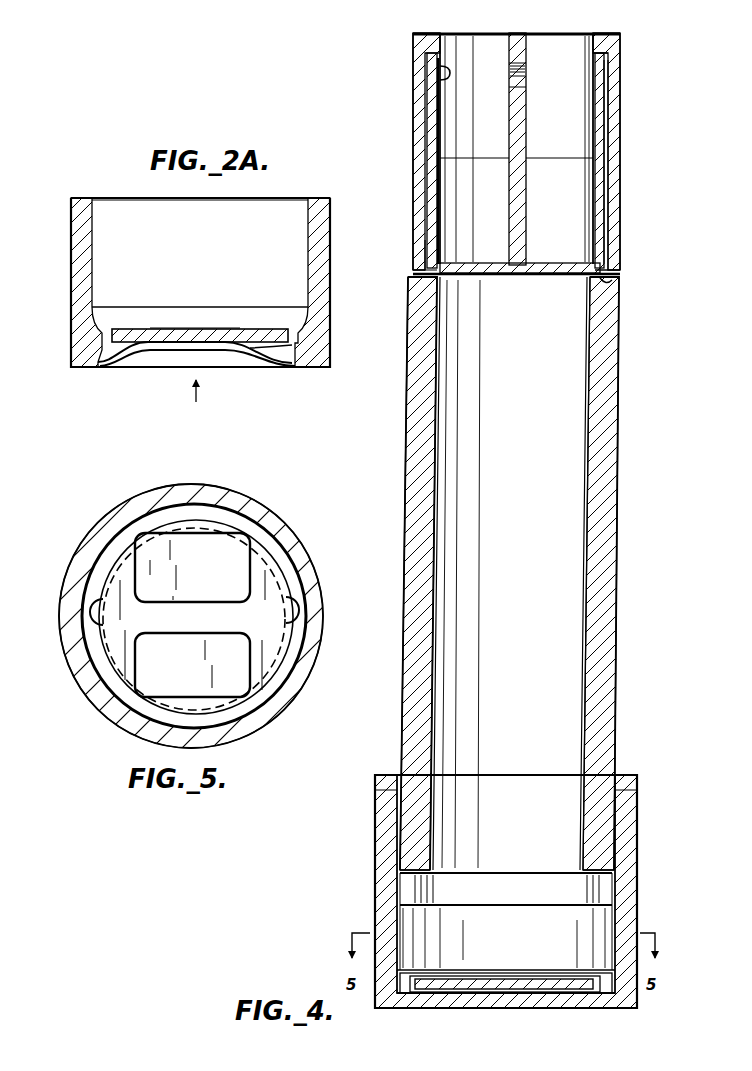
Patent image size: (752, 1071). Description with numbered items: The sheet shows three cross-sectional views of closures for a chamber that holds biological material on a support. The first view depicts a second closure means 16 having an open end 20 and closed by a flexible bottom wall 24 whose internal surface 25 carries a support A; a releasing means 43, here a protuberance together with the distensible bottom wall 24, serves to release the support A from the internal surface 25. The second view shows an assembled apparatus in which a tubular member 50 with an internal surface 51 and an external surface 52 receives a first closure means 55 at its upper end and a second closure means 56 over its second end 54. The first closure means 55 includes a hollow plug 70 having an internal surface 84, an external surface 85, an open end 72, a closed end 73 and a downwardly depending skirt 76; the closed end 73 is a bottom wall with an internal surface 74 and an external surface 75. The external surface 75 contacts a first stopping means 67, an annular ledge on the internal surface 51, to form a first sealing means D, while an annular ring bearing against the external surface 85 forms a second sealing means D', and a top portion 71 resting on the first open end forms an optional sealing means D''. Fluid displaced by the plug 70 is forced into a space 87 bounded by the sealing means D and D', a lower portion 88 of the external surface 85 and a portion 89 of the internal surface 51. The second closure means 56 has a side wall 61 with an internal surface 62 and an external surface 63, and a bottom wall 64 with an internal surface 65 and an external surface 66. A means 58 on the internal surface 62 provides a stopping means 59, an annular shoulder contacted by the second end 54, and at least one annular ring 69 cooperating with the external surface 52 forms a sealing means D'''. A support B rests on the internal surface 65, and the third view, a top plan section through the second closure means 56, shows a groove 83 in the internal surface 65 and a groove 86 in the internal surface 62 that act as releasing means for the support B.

In FIG. 2A, the second closure means 16 is at (70, 330).
In FIG. 2A, the open end 20 is at (114, 205).
In FIG. 2A, the bottom wall 24 is at (245, 344).
In FIG. 2A, the internal surface 25 is at (278, 353).
In FIG. 2A, the releasing means 43 is at (153, 338).
In FIG. 2A, the support A is at (208, 328).
In FIG. 4, the tubular member 50 is at (620, 529).
In FIG. 4, the internal surface 51 is at (605, 378).
In FIG. 4, the external surface 52 is at (618, 433).
In FIG. 4, the second end 54 is at (412, 896).
In FIG. 4, the first closure means 55 is at (547, 32).
In FIG. 5, the second closure means 56 is at (267, 503).
In FIG. 4, the second closure means 56 is at (374, 921).
In FIG. 4, the means including stopping means 58 is at (590, 893).
In FIG. 4, the stopping means 59 is at (623, 876).
In FIG. 5, the side wall 61 is at (140, 492).
In FIG. 4, the side wall 61 is at (380, 859).
In FIG. 5, the internal surface 62 is at (127, 534).
In FIG. 4, the internal surface 62 is at (606, 858).
In FIG. 4, the external surface 63 is at (407, 877).
In FIG. 4, the bottom wall 64 is at (412, 1013).
In FIG. 4, the internal surface 65 is at (550, 994).
In FIG. 4, the external surface 66 is at (470, 1007).
In FIG. 4, the first stopping means 67 is at (604, 283).
In FIG. 4, the annular ring 69 is at (618, 846).
In FIG. 4, the plug 70 is at (487, 32).
In FIG. 4, the top portion 71 is at (622, 40).
In FIG. 4, the open end 72 is at (470, 54).
In FIG. 4, the closed end 73 is at (496, 281).
In FIG. 4, the internal surface 74 is at (575, 262).
In FIG. 4, the external surface 75 is at (588, 282).
In FIG. 4, the downwardly depending skirt 76 is at (432, 174).
In FIG. 5, the groove 83 is at (148, 613).
In FIG. 4, the internal surface 84 is at (437, 62).
In FIG. 4, the external surface 85 is at (430, 89).
In FIG. 5, the groove 86 is at (300, 606).
In FIG. 4, the space 87 is at (420, 266).
In FIG. 4, the lower portion of external surface 88 is at (606, 186).
In FIG. 4, the portion of internal surface 89 is at (428, 243).
In FIG. 5, the support B is at (85, 700).
In FIG. 4, the support B is at (560, 977).
In FIG. 4, the first sealing means D is at (637, 281).
In FIG. 4, the second sealing means D' is at (645, 125).
In FIG. 4, the optional sealing means D'' is at (653, 61).
In FIG. 4, the sealing means D''' is at (356, 815).